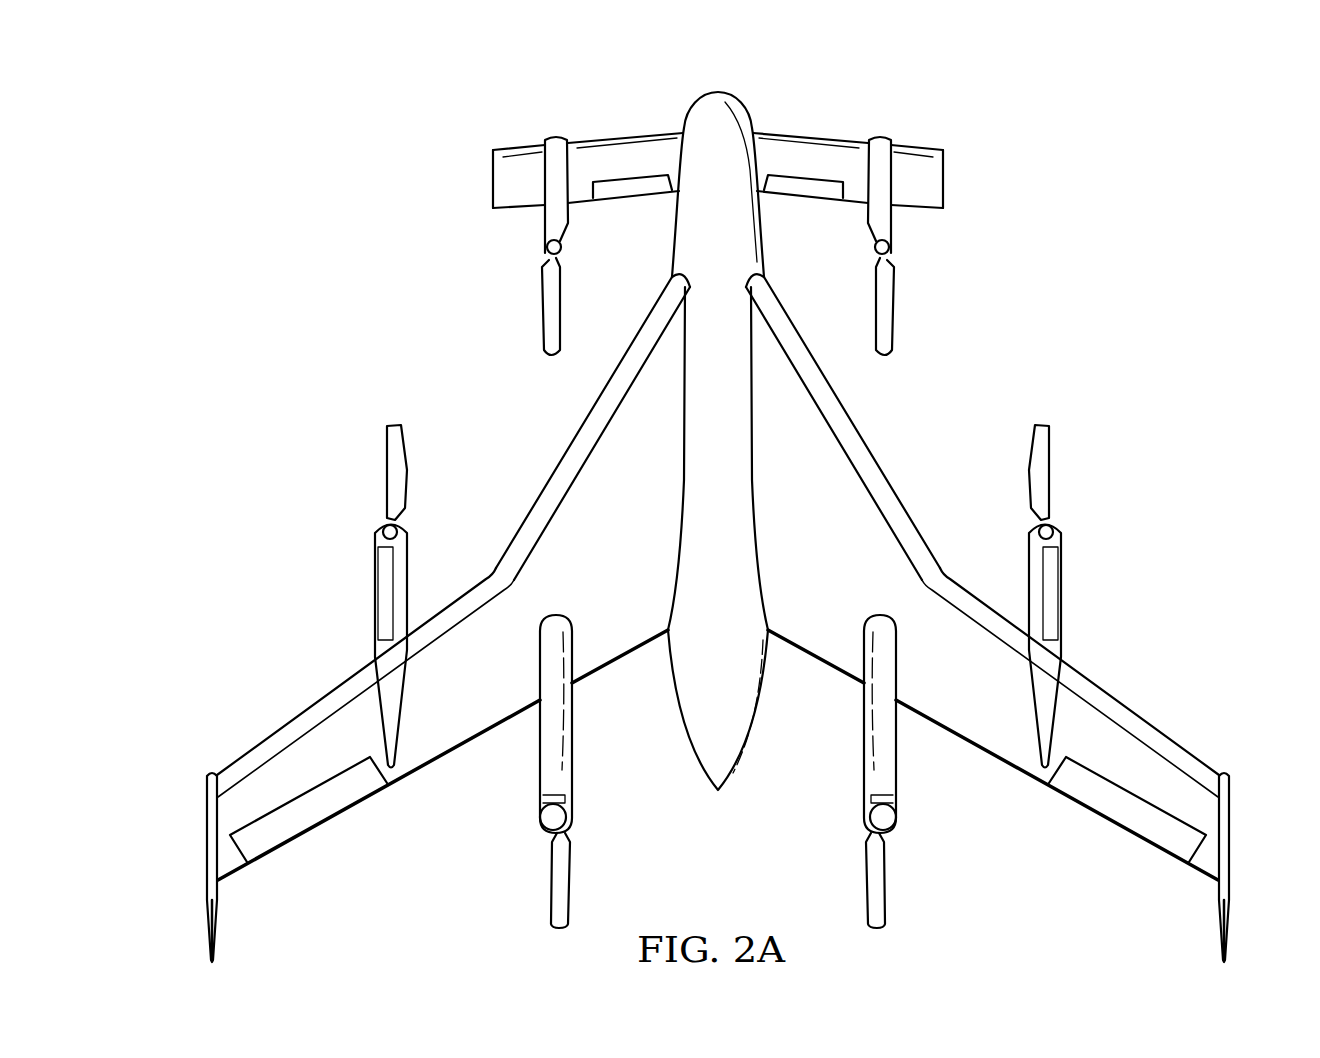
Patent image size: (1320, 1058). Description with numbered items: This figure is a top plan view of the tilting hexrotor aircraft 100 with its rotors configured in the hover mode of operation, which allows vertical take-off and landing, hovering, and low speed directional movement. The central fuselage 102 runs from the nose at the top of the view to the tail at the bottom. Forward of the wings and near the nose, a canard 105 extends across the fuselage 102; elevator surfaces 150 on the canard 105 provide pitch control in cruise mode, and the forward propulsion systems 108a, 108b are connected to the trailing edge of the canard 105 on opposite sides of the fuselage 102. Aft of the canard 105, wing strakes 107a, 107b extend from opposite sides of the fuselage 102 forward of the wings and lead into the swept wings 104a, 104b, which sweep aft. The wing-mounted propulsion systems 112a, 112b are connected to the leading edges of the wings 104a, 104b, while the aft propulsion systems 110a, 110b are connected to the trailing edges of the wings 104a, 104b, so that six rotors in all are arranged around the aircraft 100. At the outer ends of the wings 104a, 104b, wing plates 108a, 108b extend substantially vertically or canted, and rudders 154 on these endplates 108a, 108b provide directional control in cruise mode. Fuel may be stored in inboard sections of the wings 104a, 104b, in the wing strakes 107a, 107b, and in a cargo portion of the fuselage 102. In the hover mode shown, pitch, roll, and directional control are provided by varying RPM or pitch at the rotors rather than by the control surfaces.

The tiltrotor aircraft 100 is at (462, 105).
The fuselage 102 is at (667, 682).
The swept wing 104a is at (1159, 693).
The swept wing 104b is at (299, 712).
The canard 105 is at (805, 137).
The wing strake 107a is at (875, 461).
The wing strake 107b is at (561, 461).
The forward propulsion system 108a is at (920, 247).
The forward propulsion system 108b is at (516, 247).
The aft propulsion system 110a is at (921, 818).
The aft propulsion system 110b is at (515, 818).
The wing-mounted propulsion system 112a is at (1086, 532).
The wing-mounted propulsion system 112b is at (350, 532).
The elevator surface 150 is at (628, 187).
The rudder 154 is at (312, 815).